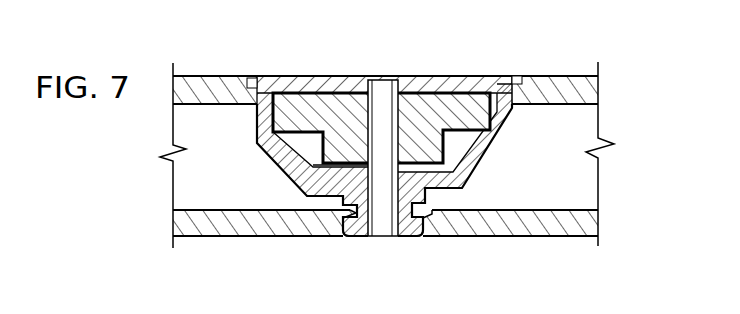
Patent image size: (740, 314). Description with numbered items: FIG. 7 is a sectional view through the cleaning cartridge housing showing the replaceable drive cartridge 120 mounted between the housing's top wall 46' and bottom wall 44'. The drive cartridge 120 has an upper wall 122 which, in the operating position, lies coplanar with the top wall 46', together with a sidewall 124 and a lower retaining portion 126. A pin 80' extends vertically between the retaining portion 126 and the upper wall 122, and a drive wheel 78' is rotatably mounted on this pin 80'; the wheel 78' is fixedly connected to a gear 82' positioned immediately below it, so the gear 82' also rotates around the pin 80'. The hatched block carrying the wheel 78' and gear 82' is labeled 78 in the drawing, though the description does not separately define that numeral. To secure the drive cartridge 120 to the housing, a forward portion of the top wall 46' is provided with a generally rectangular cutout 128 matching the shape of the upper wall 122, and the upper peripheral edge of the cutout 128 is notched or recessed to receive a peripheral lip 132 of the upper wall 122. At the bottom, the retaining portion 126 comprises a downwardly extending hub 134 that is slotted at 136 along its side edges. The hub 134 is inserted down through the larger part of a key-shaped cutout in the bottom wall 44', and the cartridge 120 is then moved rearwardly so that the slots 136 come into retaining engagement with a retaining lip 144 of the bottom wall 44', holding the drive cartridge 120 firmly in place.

The drive cartridge 120 is at (347, 74).
The upper wall 122 is at (430, 80).
The sidewall 124 is at (503, 143).
The lower retaining portion 126 is at (348, 232).
The cutout 128 is at (268, 88).
The peripheral lip 132 is at (252, 78).
The hub 134 is at (424, 230).
The slots 136 is at (340, 216).
The retaining lip 144 is at (426, 207).
The insert 78 is at (393, 99).
The drive wheel 78' is at (424, 128).
The pin 80' is at (404, 178).
The gear 82' is at (290, 159).
The bottom wall 44' is at (385, 243).
The top wall 46' is at (563, 71).